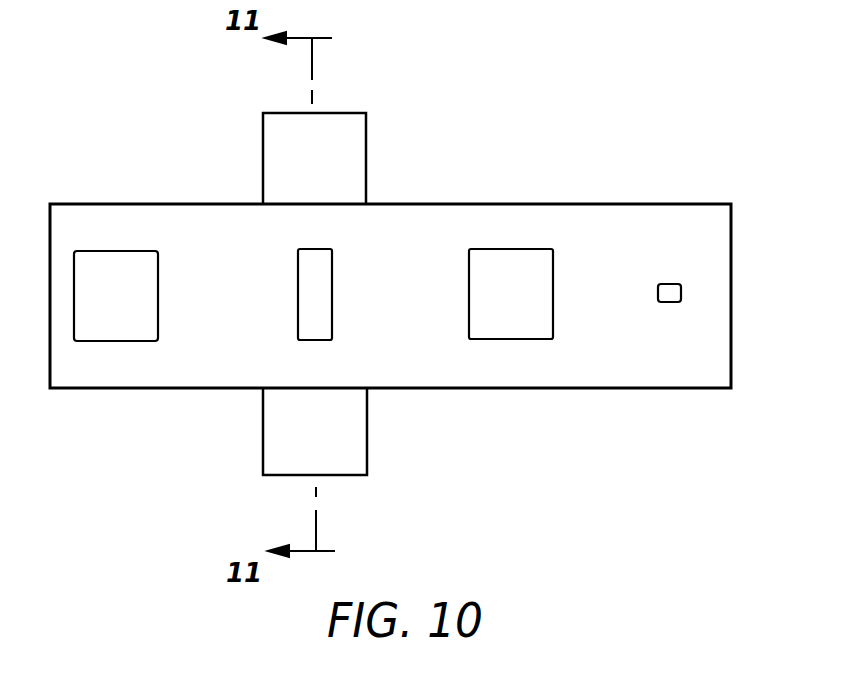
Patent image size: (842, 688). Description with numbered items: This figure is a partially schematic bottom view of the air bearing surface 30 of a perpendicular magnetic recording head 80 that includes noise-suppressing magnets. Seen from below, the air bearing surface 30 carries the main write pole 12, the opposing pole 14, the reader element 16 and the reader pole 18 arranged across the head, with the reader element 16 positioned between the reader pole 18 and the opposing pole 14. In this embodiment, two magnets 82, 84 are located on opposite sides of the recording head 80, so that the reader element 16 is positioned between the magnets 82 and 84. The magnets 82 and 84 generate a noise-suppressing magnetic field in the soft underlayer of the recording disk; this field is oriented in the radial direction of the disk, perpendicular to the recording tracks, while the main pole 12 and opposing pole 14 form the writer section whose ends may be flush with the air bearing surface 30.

The perpendicular magnetic recording head 80 is at (147, 168).
The magnet 82 is at (357, 160).
The magnet 84 is at (350, 430).
The air bearing surface 30 is at (528, 218).
The reader pole 18 is at (137, 318).
The read element 16 is at (323, 300).
The opposing pole 14 is at (537, 317).
The main pole 12 is at (670, 302).